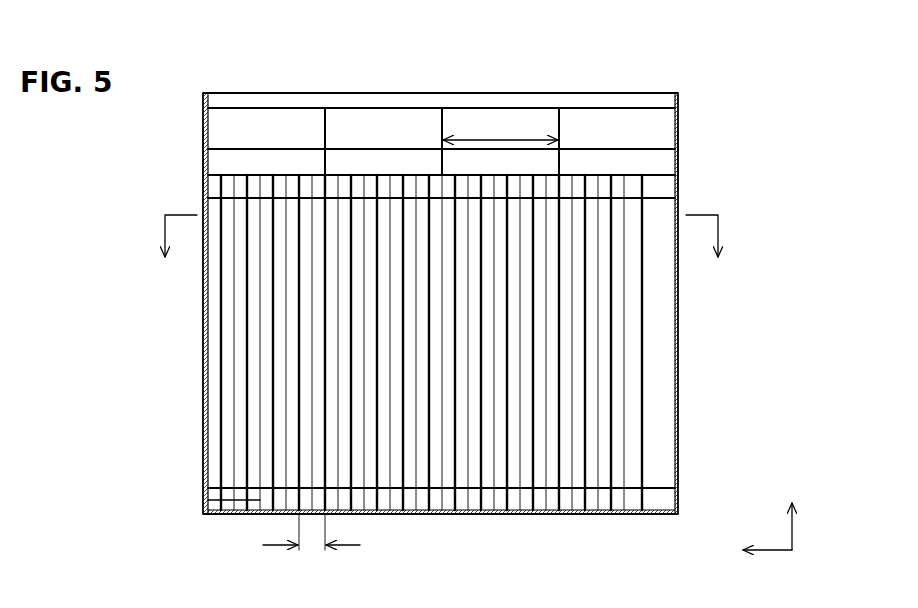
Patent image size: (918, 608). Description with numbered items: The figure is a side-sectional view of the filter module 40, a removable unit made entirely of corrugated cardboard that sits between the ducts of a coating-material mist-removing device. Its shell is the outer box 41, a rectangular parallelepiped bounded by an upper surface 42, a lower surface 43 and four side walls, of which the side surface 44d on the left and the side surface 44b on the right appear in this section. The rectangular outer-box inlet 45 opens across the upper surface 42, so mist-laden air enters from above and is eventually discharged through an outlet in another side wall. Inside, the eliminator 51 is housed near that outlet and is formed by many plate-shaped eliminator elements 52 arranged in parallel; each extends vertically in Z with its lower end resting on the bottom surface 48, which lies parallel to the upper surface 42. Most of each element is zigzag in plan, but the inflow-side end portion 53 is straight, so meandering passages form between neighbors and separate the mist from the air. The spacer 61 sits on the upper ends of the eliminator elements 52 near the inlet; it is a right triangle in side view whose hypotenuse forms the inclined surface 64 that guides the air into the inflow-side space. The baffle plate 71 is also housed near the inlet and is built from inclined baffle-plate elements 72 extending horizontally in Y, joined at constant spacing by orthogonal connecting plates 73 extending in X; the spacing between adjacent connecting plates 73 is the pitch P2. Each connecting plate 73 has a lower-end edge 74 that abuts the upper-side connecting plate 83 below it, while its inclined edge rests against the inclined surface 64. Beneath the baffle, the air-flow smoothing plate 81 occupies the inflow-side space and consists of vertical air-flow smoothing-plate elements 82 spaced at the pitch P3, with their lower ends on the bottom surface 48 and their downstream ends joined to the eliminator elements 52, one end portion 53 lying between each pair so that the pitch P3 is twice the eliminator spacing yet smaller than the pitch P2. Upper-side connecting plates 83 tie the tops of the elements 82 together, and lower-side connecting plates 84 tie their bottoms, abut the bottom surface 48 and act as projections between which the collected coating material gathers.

The filter module 40 is at (164, 59).
The outer box 41 is at (203, 335).
The upper surface 42 is at (606, 92).
The lower surface 43 is at (623, 520).
The side surface 44b is at (683, 159).
The side surface 44d is at (200, 159).
The outer-box inlet 45 is at (272, 104).
The bottom surface 48 is at (237, 504).
The eliminator 51 is at (625, 425).
The eliminator element 52 is at (520, 498).
The end portion 53 is at (429, 342).
The spacer 61 is at (357, 160).
The inclined surface 64 is at (388, 158).
The baffle plate 71 is at (466, 108).
The baffle-plate element 72 is at (592, 108).
The connecting plate 73 is at (219, 108).
The lower-end edge 74 is at (446, 181).
The air-flow smoothing plate 81 is at (645, 357).
The air-flow smoothing-plate element 82 is at (432, 514).
The upper-side connecting plate 83 is at (660, 186).
The lower-side connecting plate 84 is at (665, 497).
The pitch P2 is at (507, 110).
The pitch P3 is at (312, 548).